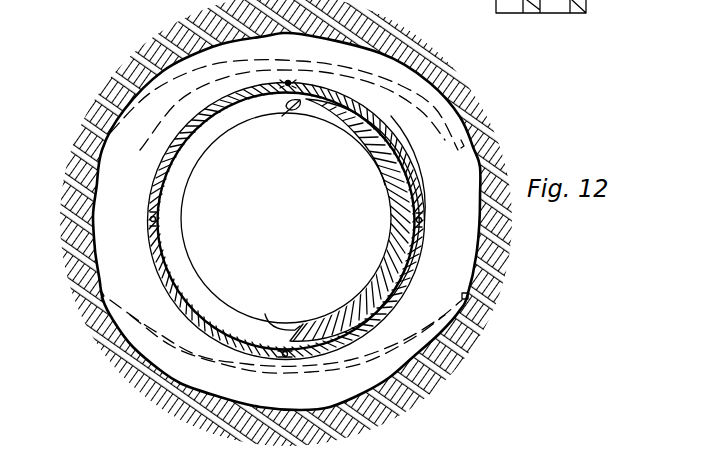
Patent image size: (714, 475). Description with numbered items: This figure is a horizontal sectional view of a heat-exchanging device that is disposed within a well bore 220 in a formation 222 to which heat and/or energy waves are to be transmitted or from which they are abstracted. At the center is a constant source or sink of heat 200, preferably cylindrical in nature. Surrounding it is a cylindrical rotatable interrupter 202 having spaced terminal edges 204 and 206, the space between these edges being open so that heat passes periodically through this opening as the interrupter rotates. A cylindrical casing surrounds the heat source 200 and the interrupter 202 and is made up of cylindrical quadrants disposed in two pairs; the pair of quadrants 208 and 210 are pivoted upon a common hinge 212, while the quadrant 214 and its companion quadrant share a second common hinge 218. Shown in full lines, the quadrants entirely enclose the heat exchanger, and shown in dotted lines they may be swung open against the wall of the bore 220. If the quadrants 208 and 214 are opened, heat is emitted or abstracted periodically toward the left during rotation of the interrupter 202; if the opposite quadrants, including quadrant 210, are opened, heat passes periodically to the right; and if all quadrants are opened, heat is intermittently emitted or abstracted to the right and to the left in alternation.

The heat source or sink 200 is at (286, 218).
The rotatable interrupter 202 is at (388, 261).
The terminal edge 204 is at (282, 116).
The terminal edge 206 is at (268, 318).
The casing quadrant 208 is at (175, 148).
The casing quadrant 210 is at (399, 151).
The common hinge 212 is at (288, 80).
The casing quadrant 214 is at (161, 261).
The common hinge 218 is at (397, 294).
The well bore 220 is at (96, 187).
The formation 222 is at (91, 84).